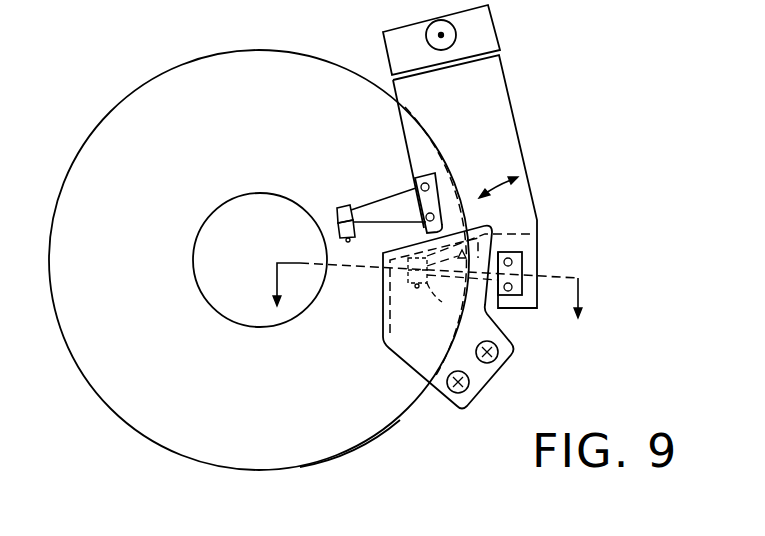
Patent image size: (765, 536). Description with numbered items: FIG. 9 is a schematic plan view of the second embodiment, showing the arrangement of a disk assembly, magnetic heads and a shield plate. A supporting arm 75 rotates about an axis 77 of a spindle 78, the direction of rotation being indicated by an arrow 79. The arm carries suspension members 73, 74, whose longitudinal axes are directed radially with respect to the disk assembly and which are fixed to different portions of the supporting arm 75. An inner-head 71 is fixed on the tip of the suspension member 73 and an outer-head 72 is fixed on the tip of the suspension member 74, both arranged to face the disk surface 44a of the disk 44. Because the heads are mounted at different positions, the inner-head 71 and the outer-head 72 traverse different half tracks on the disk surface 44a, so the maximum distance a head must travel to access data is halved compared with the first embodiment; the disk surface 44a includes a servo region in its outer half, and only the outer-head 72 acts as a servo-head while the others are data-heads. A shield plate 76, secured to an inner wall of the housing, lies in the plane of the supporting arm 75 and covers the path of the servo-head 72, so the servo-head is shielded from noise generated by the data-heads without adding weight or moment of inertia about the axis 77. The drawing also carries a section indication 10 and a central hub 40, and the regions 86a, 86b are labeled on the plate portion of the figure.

The section line 10- 10 is at (429, 296).
The hub 40 is at (255, 330).
The disk 44 is at (92, 387).
The disk surface 44a is at (350, 435).
The inner-head 71 is at (337, 206).
The outer-head 72 is at (428, 300).
The suspension member 73 is at (400, 194).
The suspension member 74 is at (533, 233).
The supporting arm 75 is at (518, 130).
The shield plate 76 is at (463, 409).
The axis 77 is at (443, 36).
The spindle 78 is at (456, 42).
The arrow 79 is at (498, 179).
The plate portion 86a is at (418, 372).
The plate portion 86b is at (382, 333).